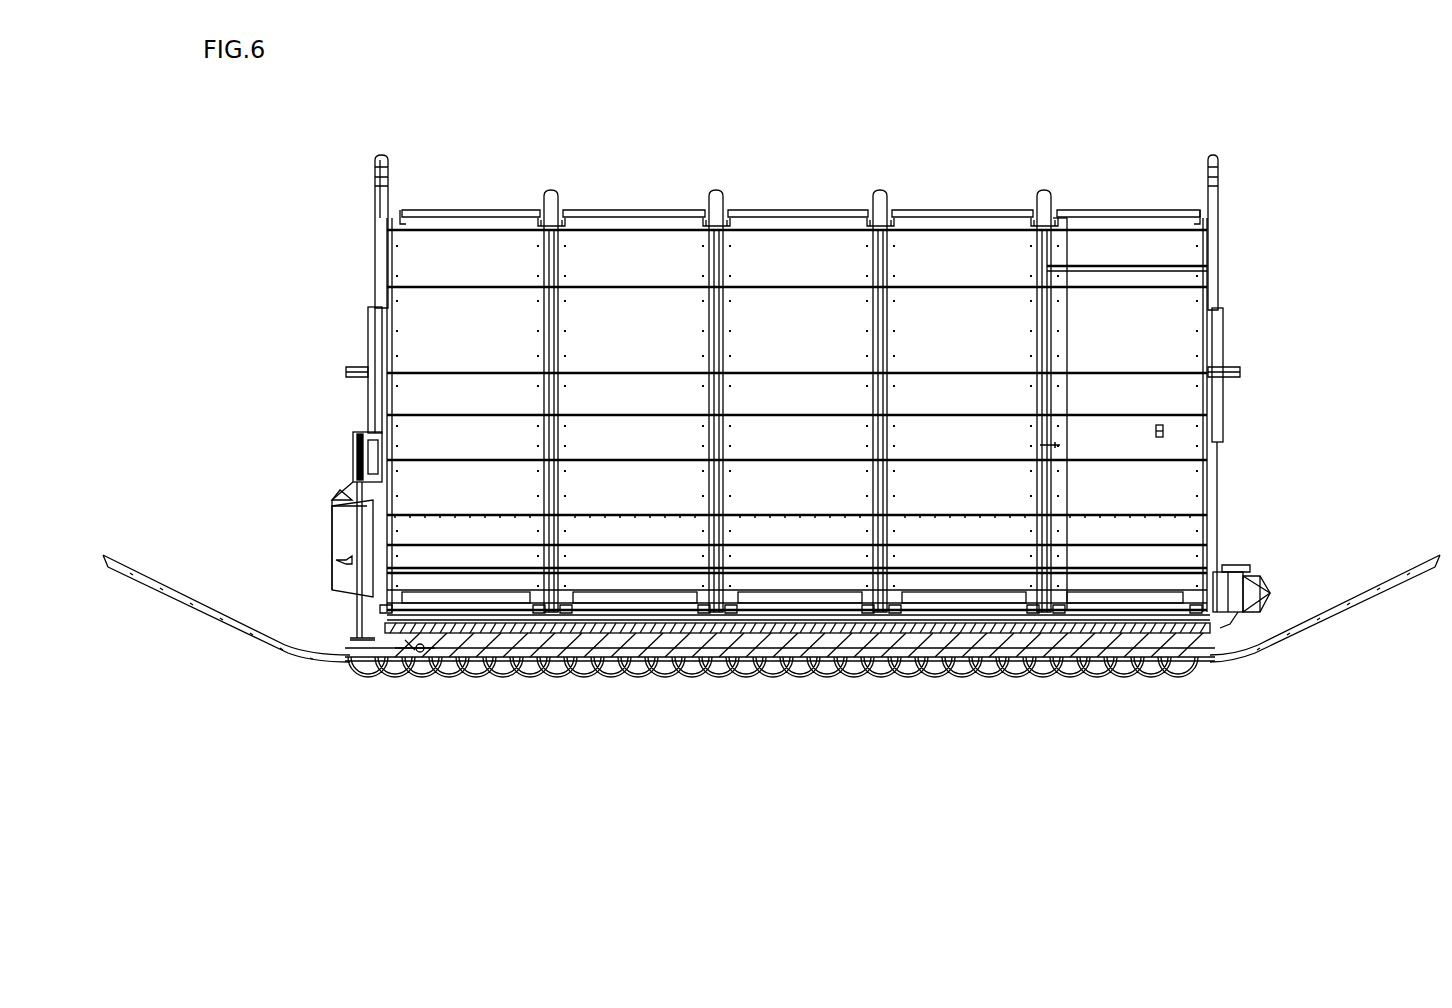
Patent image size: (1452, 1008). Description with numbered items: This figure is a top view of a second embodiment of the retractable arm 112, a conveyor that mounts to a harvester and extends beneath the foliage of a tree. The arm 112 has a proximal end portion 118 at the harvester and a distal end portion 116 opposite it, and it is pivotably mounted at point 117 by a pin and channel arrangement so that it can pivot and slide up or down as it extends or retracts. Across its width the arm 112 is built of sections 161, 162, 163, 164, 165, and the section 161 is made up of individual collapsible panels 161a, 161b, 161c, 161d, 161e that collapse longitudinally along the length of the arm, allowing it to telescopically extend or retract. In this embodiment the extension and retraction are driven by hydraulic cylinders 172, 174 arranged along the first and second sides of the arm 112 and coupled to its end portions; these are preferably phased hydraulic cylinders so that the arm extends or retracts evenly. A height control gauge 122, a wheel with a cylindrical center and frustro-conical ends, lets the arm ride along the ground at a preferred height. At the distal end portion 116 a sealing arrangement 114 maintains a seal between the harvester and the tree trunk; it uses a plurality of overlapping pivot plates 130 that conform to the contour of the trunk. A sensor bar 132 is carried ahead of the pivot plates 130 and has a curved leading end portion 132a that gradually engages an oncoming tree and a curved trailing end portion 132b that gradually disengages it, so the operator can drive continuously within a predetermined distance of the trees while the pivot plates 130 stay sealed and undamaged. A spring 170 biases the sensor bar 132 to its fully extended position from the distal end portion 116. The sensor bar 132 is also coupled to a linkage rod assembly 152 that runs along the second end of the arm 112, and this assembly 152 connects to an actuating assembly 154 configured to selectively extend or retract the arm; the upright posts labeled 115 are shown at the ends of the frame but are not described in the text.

The retractable arm 112 is at (333, 253).
The sealing arrangement 114 is at (889, 705).
The vertical posts 115 is at (382, 166).
The distal end portion 116 is at (791, 642).
The pivot point 117 is at (350, 372).
The proximal end portion 118 is at (759, 205).
The height control gauge 122 is at (1268, 597).
The pivot plates 130 is at (360, 710).
The sensor bar 132 is at (723, 661).
The leading end portion 132a is at (1322, 598).
The trailing end portion 132b is at (156, 598).
The linkage rod assembly 152 is at (358, 619).
The actuating assembly 154 is at (355, 458).
The conveyor section 161 is at (1109, 262).
The collapsible panel 161a is at (1175, 250).
The collapsible panel 161b is at (1175, 321).
The collapsible panel 161c is at (1180, 441).
The collapsible panel 161d is at (1180, 499).
The collapsible panel 161e is at (1180, 573).
The conveyor section 162 is at (956, 246).
The conveyor section 163 is at (791, 246).
The conveyor section 164 is at (623, 246).
The conveyor section 165 is at (456, 246).
The spring 170 is at (421, 642).
The hydraulic cylinder 172 is at (1222, 322).
The hydraulic cylinder 174 is at (378, 320).